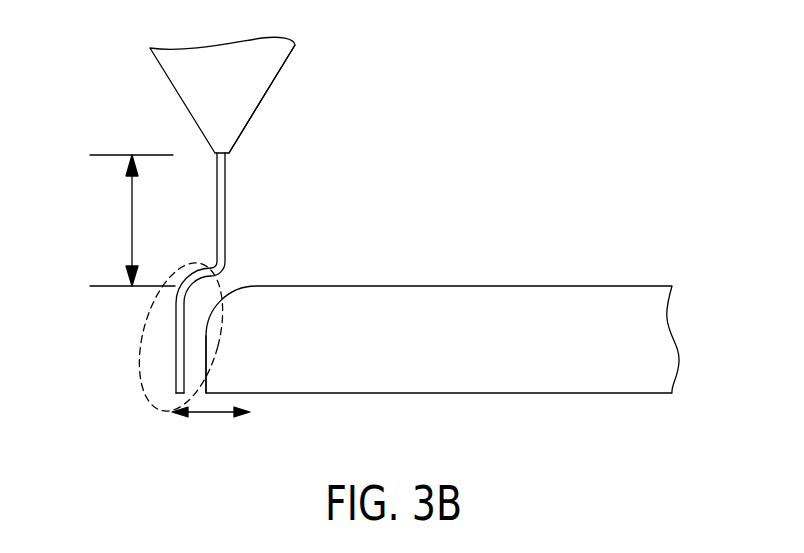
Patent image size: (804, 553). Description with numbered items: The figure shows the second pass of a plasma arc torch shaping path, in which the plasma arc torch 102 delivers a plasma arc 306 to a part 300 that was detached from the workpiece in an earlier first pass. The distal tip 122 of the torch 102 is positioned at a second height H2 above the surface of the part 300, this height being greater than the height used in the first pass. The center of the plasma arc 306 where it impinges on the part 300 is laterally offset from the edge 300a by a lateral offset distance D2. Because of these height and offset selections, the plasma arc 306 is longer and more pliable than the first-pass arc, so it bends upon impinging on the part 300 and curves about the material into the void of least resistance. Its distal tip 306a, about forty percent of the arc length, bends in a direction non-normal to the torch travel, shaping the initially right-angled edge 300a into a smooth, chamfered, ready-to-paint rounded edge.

The plasma arc torch 102 is at (257, 82).
The distal tip 122 is at (245, 137).
The plasma arc 306 is at (221, 212).
The distal tip of the plasma arc 306a is at (141, 389).
The part 300 is at (433, 286).
The edge 300a is at (208, 363).
The second height H2 is at (132, 210).
The lateral offset distance D2 is at (210, 413).